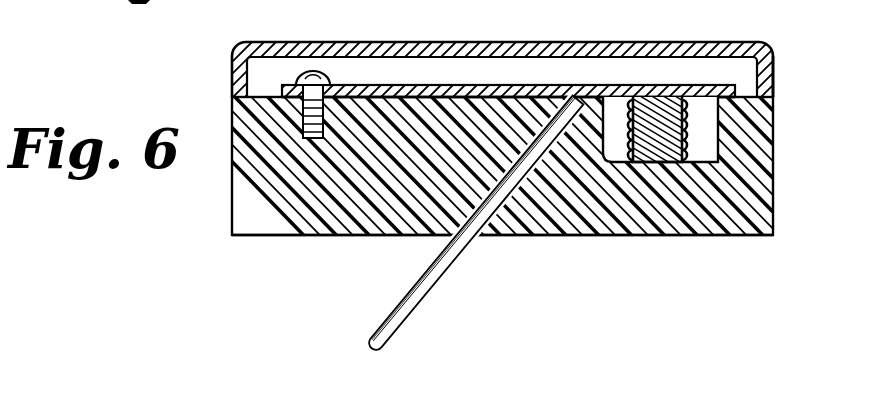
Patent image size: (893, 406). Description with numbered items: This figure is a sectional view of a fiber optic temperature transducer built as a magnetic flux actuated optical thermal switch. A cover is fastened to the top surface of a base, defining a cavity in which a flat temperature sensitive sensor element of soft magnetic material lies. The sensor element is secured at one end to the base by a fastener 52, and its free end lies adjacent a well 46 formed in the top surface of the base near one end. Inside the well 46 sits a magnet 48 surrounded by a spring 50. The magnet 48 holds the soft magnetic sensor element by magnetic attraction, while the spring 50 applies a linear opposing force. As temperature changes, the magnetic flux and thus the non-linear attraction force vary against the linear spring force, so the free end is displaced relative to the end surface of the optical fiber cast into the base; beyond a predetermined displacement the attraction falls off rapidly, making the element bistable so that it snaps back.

The well 46 is at (705, 160).
The magnet 48 is at (666, 165).
The spring 50 is at (624, 140).
The fastener 52 is at (306, 80).